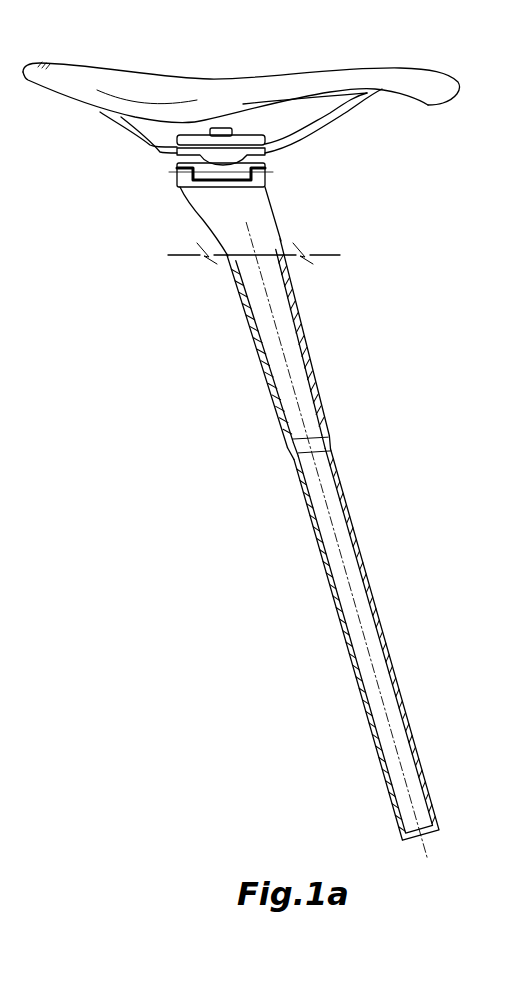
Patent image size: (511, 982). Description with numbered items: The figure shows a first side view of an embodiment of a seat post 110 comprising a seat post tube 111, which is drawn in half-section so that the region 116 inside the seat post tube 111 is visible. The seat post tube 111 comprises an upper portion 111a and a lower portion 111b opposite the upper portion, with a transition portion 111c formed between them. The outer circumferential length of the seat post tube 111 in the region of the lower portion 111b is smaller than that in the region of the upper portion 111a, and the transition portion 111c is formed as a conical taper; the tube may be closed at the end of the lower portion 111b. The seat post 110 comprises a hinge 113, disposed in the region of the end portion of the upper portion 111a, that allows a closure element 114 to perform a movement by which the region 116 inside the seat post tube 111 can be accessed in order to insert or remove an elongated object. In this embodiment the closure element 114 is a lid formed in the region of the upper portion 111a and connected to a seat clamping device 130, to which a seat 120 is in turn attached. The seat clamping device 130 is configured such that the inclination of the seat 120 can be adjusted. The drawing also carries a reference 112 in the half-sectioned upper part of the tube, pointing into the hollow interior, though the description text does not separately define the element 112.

The seat post 110 is at (286, 494).
The seat post tube 111 is at (278, 541).
The upper portion 111a is at (229, 360).
The lower portion 111b is at (277, 590).
The transition portion 111c is at (296, 452).
The upper cavity 112 is at (283, 335).
The hinge 113 is at (178, 184).
The closure element 114 is at (265, 171).
The region inside the seat post tube 116 is at (353, 623).
The seat 120 is at (375, 152).
The seat clamping device 130 is at (177, 170).